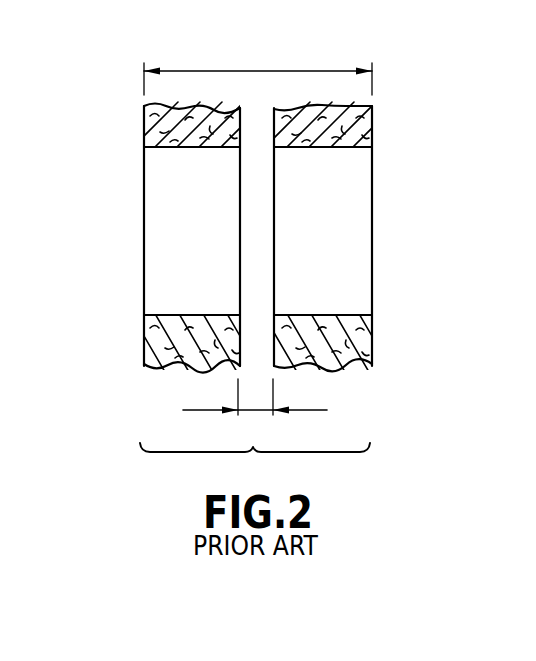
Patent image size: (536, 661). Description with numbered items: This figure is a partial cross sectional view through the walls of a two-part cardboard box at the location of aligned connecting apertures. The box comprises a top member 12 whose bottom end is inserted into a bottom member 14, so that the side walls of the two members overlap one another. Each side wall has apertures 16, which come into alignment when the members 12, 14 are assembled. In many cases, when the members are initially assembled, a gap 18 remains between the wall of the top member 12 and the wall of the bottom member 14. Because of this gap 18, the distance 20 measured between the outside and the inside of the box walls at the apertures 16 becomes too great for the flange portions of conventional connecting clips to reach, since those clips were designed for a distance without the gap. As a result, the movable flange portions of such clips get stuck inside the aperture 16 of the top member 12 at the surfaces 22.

The top member 12 is at (360, 340).
The bottom member 14 is at (150, 338).
The apertures 16 is at (152, 220).
The gap 18 is at (255, 410).
The distance 20 is at (247, 71).
The surfaces 22 is at (362, 148).